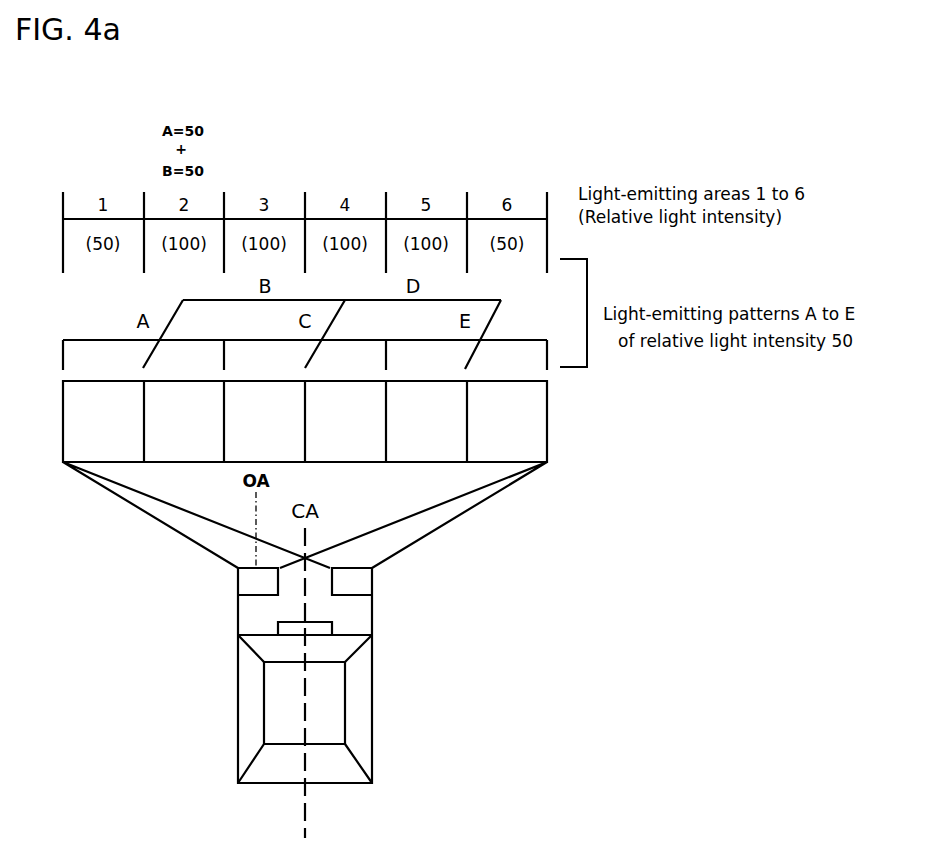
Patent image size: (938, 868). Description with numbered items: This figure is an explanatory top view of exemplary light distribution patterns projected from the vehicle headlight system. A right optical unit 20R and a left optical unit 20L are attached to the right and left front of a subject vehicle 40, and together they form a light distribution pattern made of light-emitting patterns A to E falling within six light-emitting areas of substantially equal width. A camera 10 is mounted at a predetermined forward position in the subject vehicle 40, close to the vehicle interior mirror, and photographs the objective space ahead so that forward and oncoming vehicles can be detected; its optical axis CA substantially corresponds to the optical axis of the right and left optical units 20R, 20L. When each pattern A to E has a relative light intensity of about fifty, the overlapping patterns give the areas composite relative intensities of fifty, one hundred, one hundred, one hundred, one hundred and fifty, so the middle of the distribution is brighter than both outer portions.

The camera 10 is at (287, 628).
The left optical unit 20L is at (253, 585).
The right optical unit 20R is at (358, 585).
The subject vehicle 40 is at (325, 716).